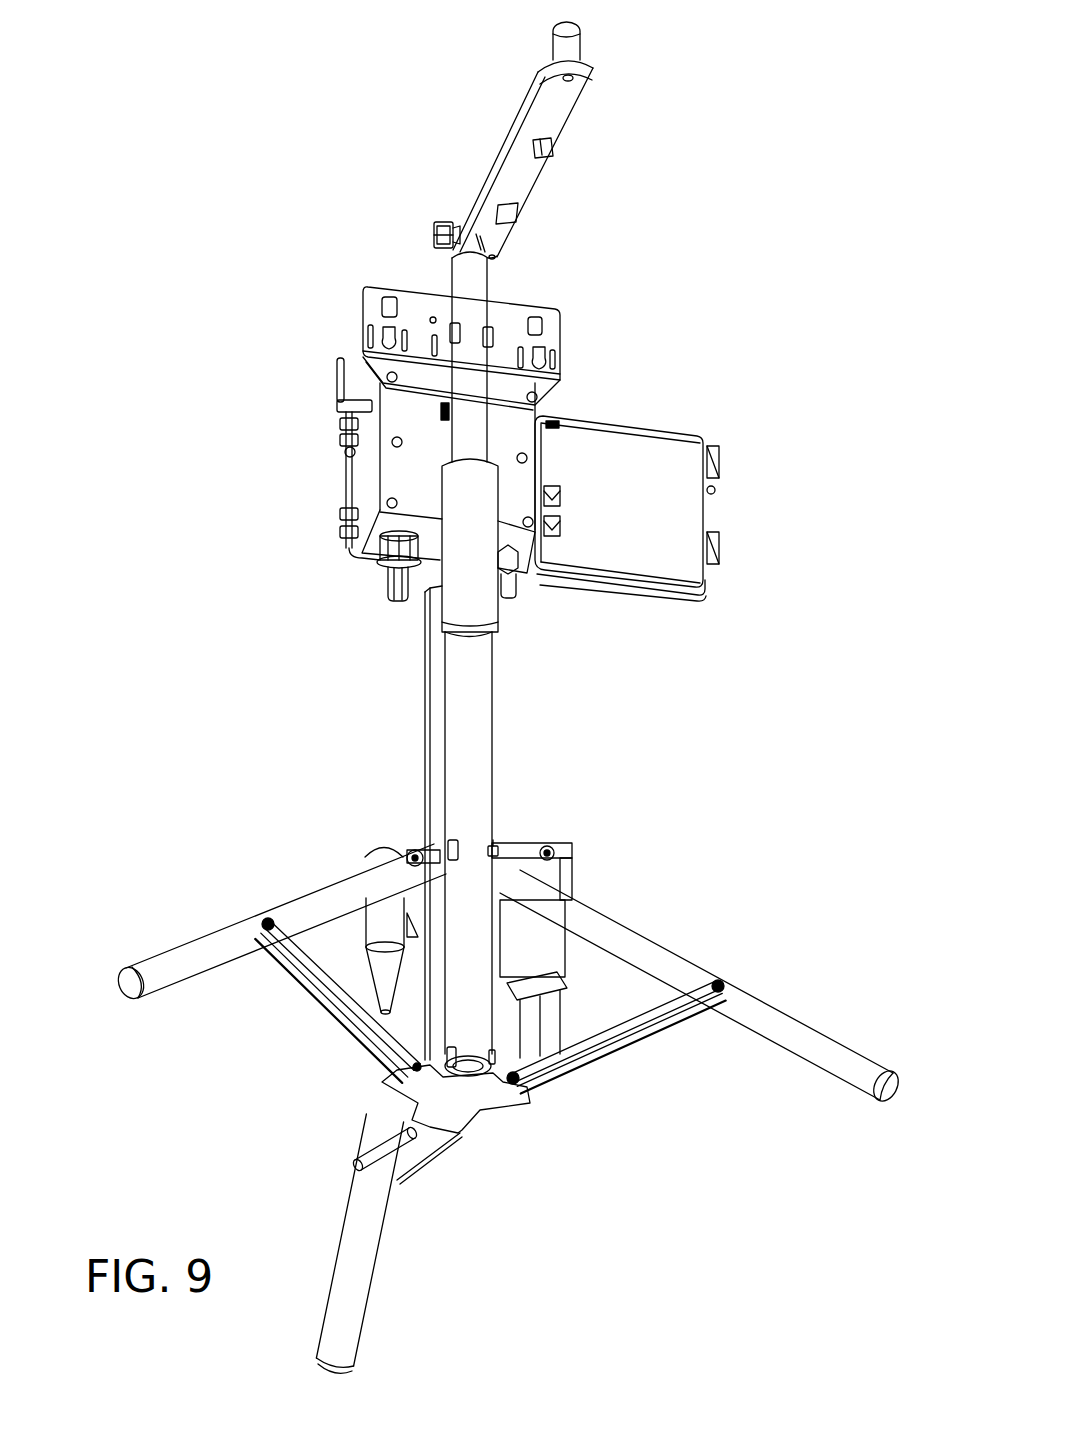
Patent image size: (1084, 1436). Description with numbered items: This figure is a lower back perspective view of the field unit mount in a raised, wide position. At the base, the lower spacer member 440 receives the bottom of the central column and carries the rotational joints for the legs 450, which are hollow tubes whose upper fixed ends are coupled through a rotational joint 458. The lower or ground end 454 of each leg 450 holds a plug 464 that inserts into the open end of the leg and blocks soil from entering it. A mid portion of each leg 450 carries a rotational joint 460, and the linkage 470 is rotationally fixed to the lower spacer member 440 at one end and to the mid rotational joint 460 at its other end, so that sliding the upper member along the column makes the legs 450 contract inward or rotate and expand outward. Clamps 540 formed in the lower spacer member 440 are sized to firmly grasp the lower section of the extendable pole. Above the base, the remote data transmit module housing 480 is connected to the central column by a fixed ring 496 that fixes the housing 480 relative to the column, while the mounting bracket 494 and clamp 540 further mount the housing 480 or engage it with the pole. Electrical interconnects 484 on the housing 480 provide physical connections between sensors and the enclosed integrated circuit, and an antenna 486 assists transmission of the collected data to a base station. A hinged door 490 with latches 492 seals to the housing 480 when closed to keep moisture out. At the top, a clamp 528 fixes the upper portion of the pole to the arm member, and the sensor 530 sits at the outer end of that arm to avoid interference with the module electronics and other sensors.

The lower spacer member 440 is at (468, 1110).
The leg 450 is at (795, 1030).
The lower or ground end of the leg 454 is at (136, 990).
The rotational joint 458 is at (414, 858).
The rotational joint 460 is at (272, 922).
The plug 464 is at (890, 1094).
The linkage 470 is at (318, 1017).
The housing 480 is at (395, 465).
The electrical interconnects 484 is at (380, 590).
The antenna 486 is at (340, 381).
The hinged door 490 is at (630, 446).
The latches 492 is at (727, 462).
The mounting bracket 494 is at (363, 292).
The fixed ring 496 is at (425, 598).
The clamp 528 is at (437, 222).
The sensor 530 is at (585, 42).
The clamp 540 is at (495, 851).